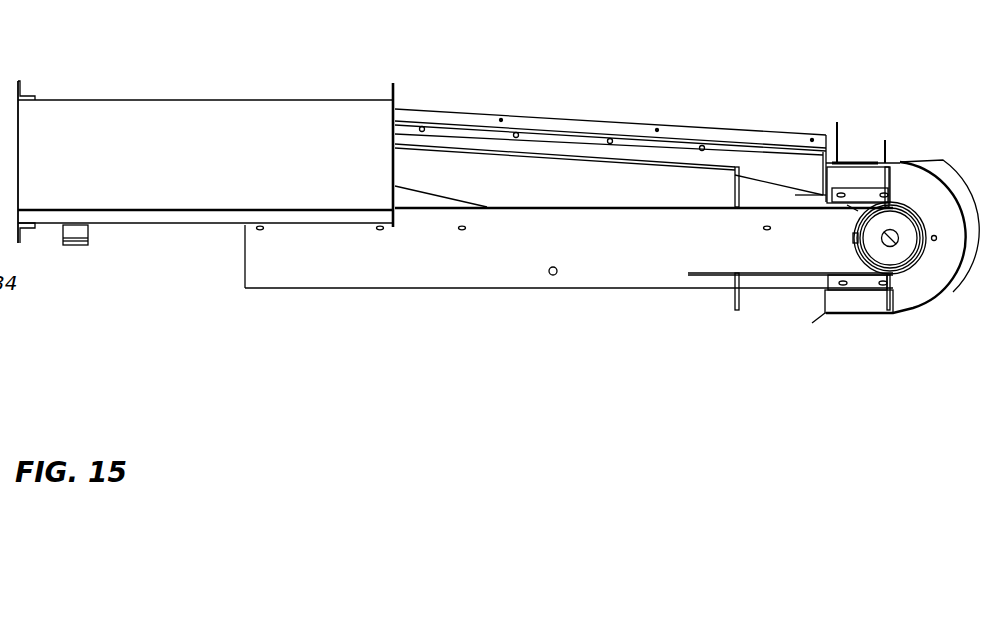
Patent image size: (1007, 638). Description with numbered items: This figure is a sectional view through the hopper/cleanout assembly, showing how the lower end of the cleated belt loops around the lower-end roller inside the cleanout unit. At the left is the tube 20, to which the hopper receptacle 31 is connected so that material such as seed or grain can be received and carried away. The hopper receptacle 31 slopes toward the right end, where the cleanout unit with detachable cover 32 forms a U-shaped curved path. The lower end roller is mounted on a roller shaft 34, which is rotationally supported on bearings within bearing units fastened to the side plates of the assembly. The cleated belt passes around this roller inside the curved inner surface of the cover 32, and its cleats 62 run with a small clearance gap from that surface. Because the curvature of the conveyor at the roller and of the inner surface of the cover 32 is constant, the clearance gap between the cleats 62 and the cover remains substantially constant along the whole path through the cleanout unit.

The tube 20 is at (90, 103).
The hopper receptacle 31 is at (578, 167).
The cleanout unit with detachable cover 32 is at (910, 278).
The roller shaft 34 is at (887, 243).
The cleats 62 is at (732, 185).